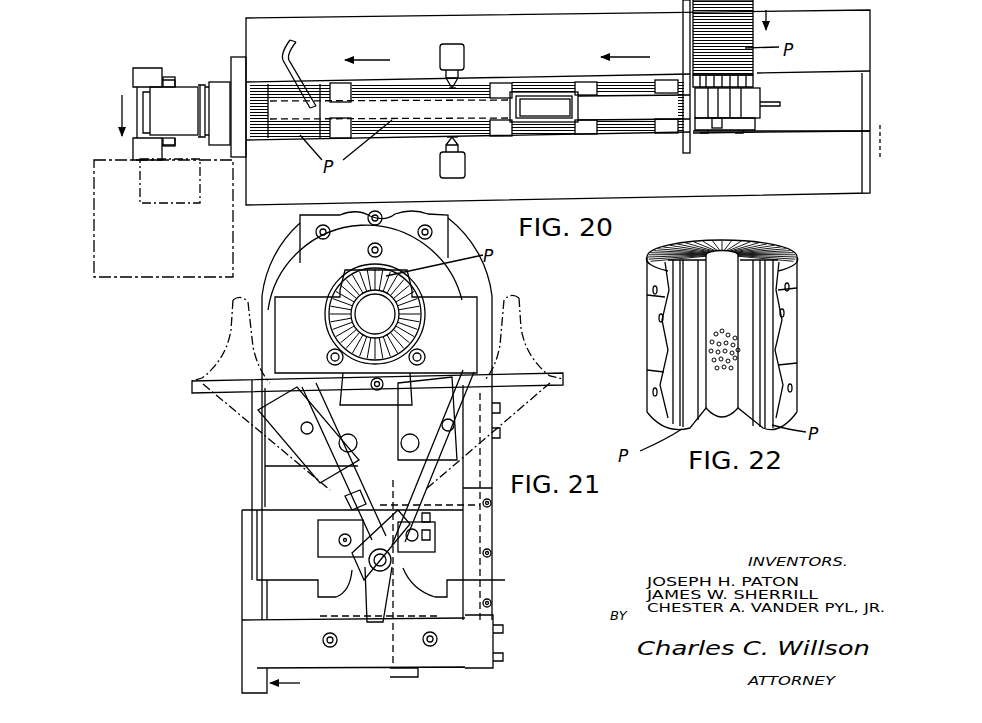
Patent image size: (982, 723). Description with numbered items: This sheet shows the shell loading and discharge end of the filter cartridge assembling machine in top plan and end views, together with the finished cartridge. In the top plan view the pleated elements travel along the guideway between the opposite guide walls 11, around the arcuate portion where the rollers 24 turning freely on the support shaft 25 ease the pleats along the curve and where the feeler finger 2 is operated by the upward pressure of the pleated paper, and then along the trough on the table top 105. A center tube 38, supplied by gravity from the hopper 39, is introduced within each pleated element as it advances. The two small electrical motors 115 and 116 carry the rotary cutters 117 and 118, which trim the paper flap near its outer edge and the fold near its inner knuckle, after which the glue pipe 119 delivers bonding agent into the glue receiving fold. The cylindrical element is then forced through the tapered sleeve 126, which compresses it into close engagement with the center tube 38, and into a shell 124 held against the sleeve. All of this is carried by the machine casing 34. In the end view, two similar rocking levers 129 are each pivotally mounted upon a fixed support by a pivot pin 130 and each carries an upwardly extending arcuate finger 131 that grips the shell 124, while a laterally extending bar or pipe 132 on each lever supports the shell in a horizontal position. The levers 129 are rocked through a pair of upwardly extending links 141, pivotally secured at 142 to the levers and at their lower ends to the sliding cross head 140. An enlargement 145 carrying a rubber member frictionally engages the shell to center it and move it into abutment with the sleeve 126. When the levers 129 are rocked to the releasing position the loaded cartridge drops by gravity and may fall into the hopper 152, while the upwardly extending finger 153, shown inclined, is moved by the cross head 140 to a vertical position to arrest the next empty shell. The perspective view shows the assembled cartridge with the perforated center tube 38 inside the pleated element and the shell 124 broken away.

In FIG. 20, the feeler finger 2 is at (717, 128).
In FIG. 20, the guide walls 11 is at (688, 27).
In FIG. 20, the rollers 24 is at (757, 91).
In FIG. 20, the support shaft 25 is at (769, 104).
In FIG. 21, the machine casing 34 is at (297, 686).
In FIG. 20, the perforated center tube 38 is at (551, 108).
In FIG. 21, the perforated center tube 38 is at (362, 313).
In FIG. 22, the perforated center tube 38 is at (722, 255).
In FIG. 20, the hopper 39 is at (542, 84).
In FIG. 20, the table top 105 is at (722, 182).
In FIG. 20, the electrical motor 115 is at (450, 165).
In FIG. 20, the electrical motor 116 is at (462, 54).
In FIG. 20, the rotary cutter 117 is at (448, 136).
In FIG. 20, the rotary cutter 118 is at (458, 88).
In FIG. 20, the glue pipe 119 is at (286, 44).
In FIG. 20, the shell 124 is at (172, 98).
In FIG. 21, the shell 124 is at (420, 322).
In FIG. 22, the shell 124 is at (787, 270).
In FIG. 20, the tapered sleeve 126 is at (221, 88).
In FIG. 21, the rocking levers 129 is at (215, 372).
In FIG. 21, the pivot pin 130 is at (406, 440).
In FIG. 21, the arcuate finger 131 is at (338, 278).
In FIG. 21, the bar or pipe 132 is at (327, 357).
In FIG. 21, the sliding cross head 140 is at (436, 546).
In FIG. 21, the links 141 is at (342, 526).
In FIG. 21, the pivot connection 142 is at (262, 460).
In FIG. 20, the enlargement 145 is at (169, 76).
In FIG. 20, the hopper 152 is at (175, 279).
In FIG. 21, the upwardly extending finger 153 is at (345, 504).